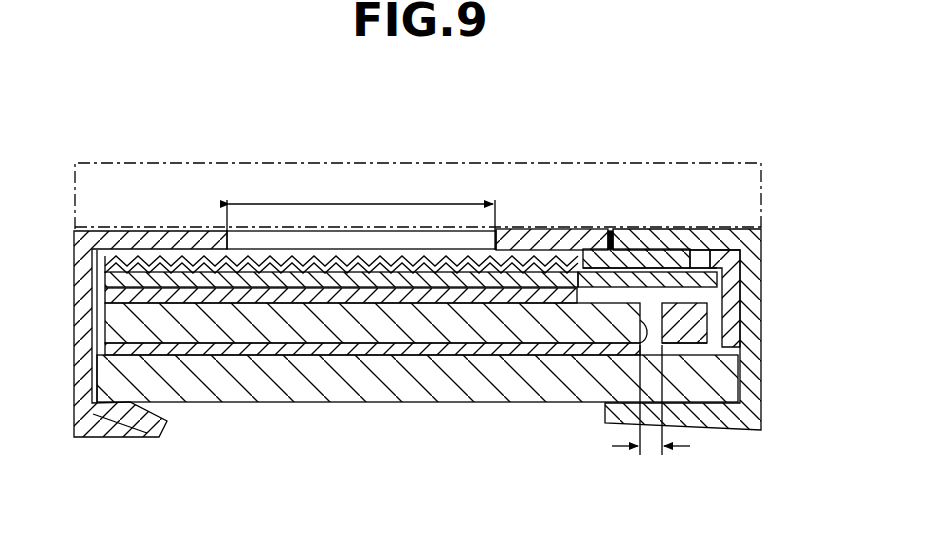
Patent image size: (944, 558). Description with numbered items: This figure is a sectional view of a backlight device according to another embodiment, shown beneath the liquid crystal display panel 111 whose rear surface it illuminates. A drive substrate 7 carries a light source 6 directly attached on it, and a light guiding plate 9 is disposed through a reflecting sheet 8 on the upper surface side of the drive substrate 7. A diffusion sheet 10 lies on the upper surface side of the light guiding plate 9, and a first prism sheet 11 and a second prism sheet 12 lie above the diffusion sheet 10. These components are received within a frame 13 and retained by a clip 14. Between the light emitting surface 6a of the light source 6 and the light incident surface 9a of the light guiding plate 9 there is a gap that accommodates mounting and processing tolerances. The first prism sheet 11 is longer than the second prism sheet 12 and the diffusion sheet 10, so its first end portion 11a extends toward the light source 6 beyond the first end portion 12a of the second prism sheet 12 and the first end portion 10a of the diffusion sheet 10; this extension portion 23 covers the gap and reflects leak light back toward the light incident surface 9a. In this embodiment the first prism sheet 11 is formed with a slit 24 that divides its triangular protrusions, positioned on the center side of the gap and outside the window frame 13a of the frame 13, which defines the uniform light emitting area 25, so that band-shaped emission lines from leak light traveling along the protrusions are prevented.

The light source 6 is at (708, 346).
The light emitting surface 6a is at (688, 342).
The drive substrate 7 is at (228, 387).
The reflecting sheet 8 is at (272, 350).
The light guiding plate 9 is at (528, 322).
The light incident surface 9a is at (641, 332).
The diffusion sheet 10 is at (350, 298).
The first end portion of the diffusion sheet 10a is at (627, 273).
The first prism sheet 11 is at (450, 268).
The first end portion of the first prism sheet 11a is at (762, 252).
The second prism sheet 12 is at (466, 283).
The first end portion of the second prism sheet 12a is at (578, 296).
The frame 13 is at (524, 226).
The window frame 13a is at (476, 230).
The clip 14 is at (753, 313).
The extension portion 23 is at (683, 270).
The slit 24 is at (670, 273).
The uniform light emitting area 25 is at (361, 213).
The liquid crystal display panel 111 is at (268, 187).